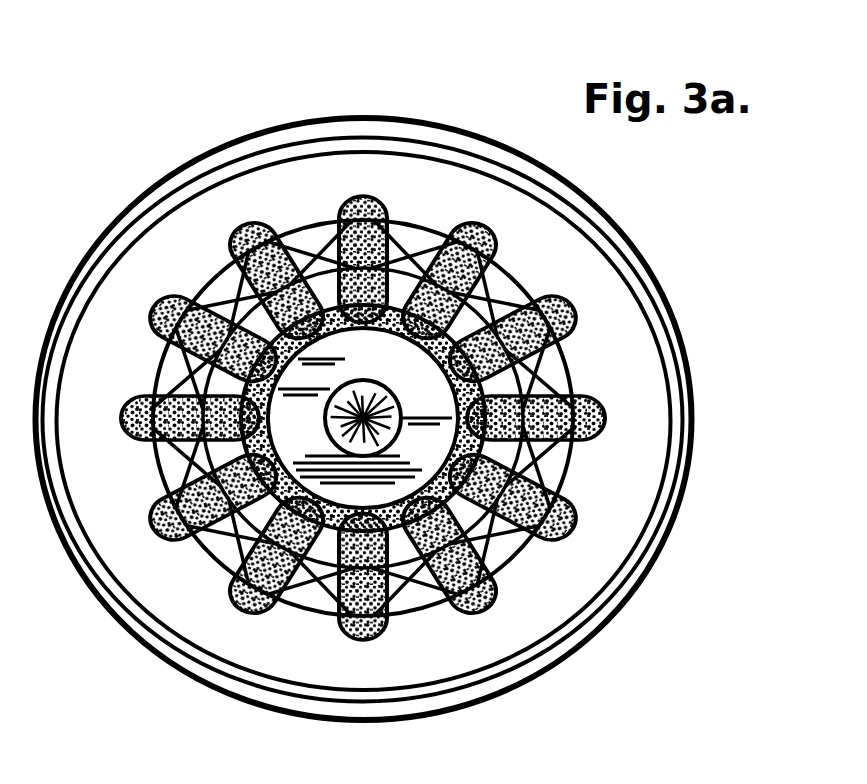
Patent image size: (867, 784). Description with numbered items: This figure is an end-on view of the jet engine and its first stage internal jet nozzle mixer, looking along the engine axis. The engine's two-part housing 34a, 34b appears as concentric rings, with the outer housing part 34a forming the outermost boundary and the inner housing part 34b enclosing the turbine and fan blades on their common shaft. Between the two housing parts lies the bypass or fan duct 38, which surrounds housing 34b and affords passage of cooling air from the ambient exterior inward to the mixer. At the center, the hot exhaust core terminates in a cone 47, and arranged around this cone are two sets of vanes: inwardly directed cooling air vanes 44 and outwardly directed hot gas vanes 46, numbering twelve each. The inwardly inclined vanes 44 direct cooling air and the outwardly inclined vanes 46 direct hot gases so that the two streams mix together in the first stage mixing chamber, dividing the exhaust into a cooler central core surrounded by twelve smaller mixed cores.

The housing part 34a is at (336, 142).
The housing part 34b is at (302, 227).
The bypass or fan duct 38 is at (133, 359).
The inwardly directed cooling air vanes 44 is at (424, 258).
The outwardly directed hot gas vanes 46 is at (493, 237).
The cone 47 is at (372, 400).